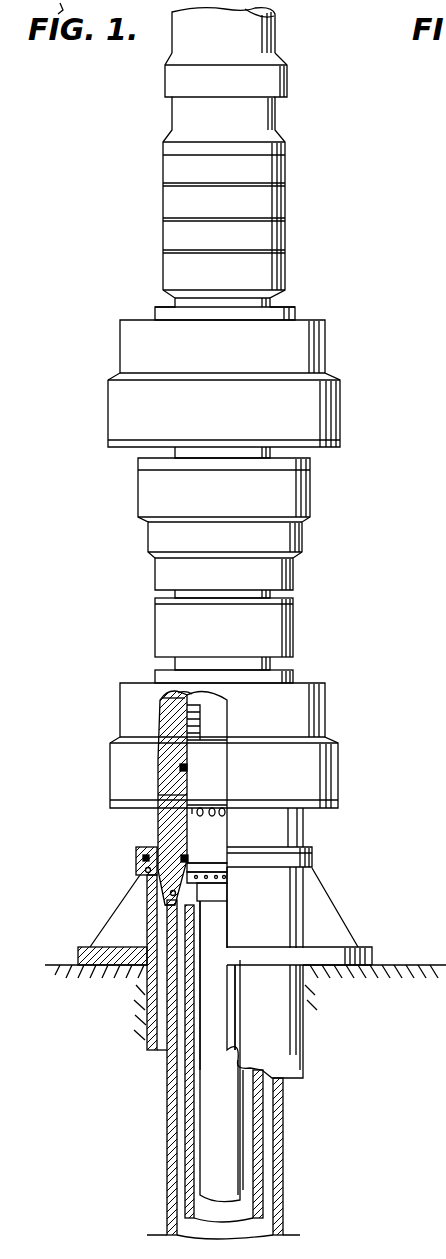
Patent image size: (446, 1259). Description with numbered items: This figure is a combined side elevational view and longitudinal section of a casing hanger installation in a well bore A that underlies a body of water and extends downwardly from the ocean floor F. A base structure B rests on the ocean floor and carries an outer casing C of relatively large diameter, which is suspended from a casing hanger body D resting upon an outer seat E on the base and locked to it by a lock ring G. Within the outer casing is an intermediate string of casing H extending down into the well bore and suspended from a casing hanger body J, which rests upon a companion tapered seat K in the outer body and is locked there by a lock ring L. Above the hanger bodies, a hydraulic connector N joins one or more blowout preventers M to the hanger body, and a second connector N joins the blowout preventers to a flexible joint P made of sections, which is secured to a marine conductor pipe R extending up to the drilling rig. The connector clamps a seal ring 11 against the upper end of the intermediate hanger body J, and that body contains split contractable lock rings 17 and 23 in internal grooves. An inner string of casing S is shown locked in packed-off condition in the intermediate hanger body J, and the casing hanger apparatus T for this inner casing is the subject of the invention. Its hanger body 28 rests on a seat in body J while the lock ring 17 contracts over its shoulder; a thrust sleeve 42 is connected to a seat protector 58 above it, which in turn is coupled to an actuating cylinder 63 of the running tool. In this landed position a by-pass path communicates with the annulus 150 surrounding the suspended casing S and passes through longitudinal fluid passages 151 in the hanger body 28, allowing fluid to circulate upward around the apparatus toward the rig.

The marine conductor pipe R is at (255, 36).
The flexible joint P is at (258, 233).
The connector N is at (325, 408).
The blowout preventers M is at (293, 502).
The seal ring 11 is at (188, 702).
The actuating cylinder 63 is at (213, 722).
The lock ring 23 is at (185, 772).
The seat protector 58 is at (212, 777).
The thrust sleeve 42 is at (222, 806).
The casing hanger body J is at (158, 795).
The casing hanger body D is at (158, 821).
The lock ring G is at (143, 858).
The outer seat E is at (148, 870).
The tapered seat K is at (172, 893).
The lock ring L is at (178, 897).
The lock ring 17 is at (210, 866).
The longitudinal fluid passages 151 is at (210, 875).
The hanger body 28 is at (218, 888).
The casing hanger apparatus T is at (288, 822).
The base structure B is at (280, 928).
The ocean floor F is at (410, 965).
The annulus 150 is at (200, 1063).
The outer casing C is at (168, 1115).
The inner string of casing S is at (230, 1148).
The intermediate string of casing H is at (190, 1172).
The well bore A is at (290, 1149).